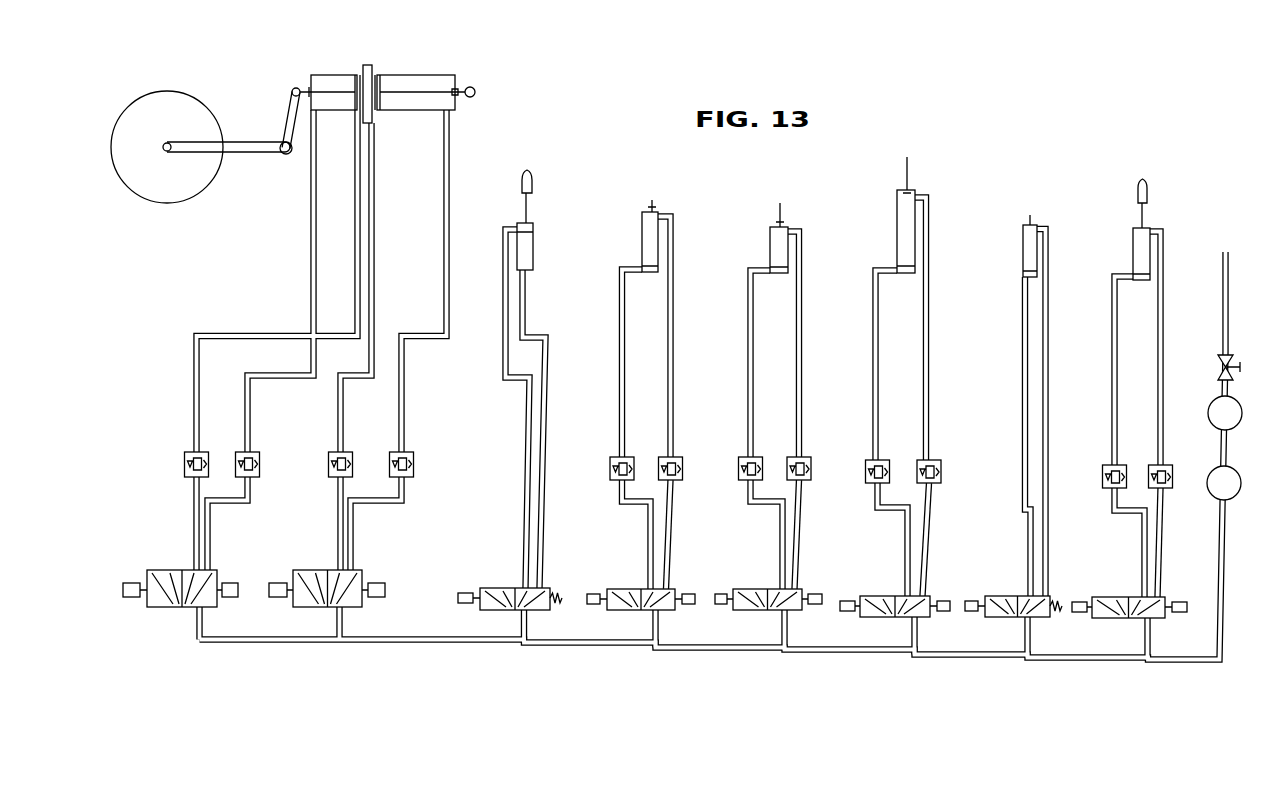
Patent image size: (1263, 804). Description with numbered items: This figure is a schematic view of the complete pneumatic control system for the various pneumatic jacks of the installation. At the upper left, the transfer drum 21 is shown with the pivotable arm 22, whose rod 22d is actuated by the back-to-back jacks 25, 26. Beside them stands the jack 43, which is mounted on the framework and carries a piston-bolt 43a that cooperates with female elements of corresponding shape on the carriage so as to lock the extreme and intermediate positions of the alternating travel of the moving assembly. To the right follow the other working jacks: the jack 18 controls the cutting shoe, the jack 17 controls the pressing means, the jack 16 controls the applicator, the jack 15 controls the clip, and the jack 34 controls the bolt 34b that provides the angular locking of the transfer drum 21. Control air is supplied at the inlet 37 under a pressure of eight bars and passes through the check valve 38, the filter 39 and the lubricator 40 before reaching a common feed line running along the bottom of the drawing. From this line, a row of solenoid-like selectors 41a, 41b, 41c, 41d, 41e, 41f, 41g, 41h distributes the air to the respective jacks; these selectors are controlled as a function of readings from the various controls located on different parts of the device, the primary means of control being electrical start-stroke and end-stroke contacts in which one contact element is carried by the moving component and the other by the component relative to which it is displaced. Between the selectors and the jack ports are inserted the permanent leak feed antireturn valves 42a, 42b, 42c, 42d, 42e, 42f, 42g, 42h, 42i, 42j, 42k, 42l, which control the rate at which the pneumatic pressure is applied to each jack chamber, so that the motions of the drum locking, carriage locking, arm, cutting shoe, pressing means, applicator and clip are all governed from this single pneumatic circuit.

The transfer drum 21 is at (166, 113).
The pivotable arm 22 is at (253, 141).
The rod 22d is at (288, 100).
The jack 25 is at (347, 74).
The jack 26 is at (437, 74).
The jack 43 is at (517, 243).
The piston-bolt 43a is at (522, 185).
The jack 18 is at (642, 228).
The jack 17 is at (770, 235).
The jack 16 is at (897, 220).
The jack 15 is at (1023, 238).
The jack 34 is at (1133, 250).
The bolt 34b is at (1138, 193).
The control air supply 37 is at (1226, 252).
The check valve 38 is at (1218, 368).
The filter 39 is at (1215, 420).
The lubricator 40 is at (1222, 488).
The solenoid-like selector 41a is at (160, 608).
The solenoid-like selector 41b is at (312, 608).
The solenoid-like selector 41c is at (500, 611).
The solenoid-like selector 41d is at (630, 611).
The solenoid-like selector 41e is at (757, 611).
The solenoid-like selector 41f is at (885, 618).
The solenoid-like selector 41g is at (1008, 618).
The solenoid-like selector 41h is at (1123, 619).
The permanent leak feed antireturn valve 42a is at (185, 457).
The permanent leak feed antireturn valve 42b is at (240, 455).
The permanent leak feed antireturn valve 42c is at (330, 457).
The permanent leak feed antireturn valve 42d is at (392, 457).
The permanent leak feed antireturn valve 42e is at (610, 460).
The permanent leak feed antireturn valve 42f is at (660, 460).
The permanent leak feed antireturn valve 42g is at (740, 460).
The permanent leak feed antireturn valve 42h is at (790, 462).
The permanent leak feed antireturn valve 42i is at (868, 463).
The permanent leak feed antireturn valve 42j is at (920, 463).
The permanent leak feed antireturn valve 42k is at (1104, 468).
The permanent leak feed antireturn valve 42l is at (1150, 468).